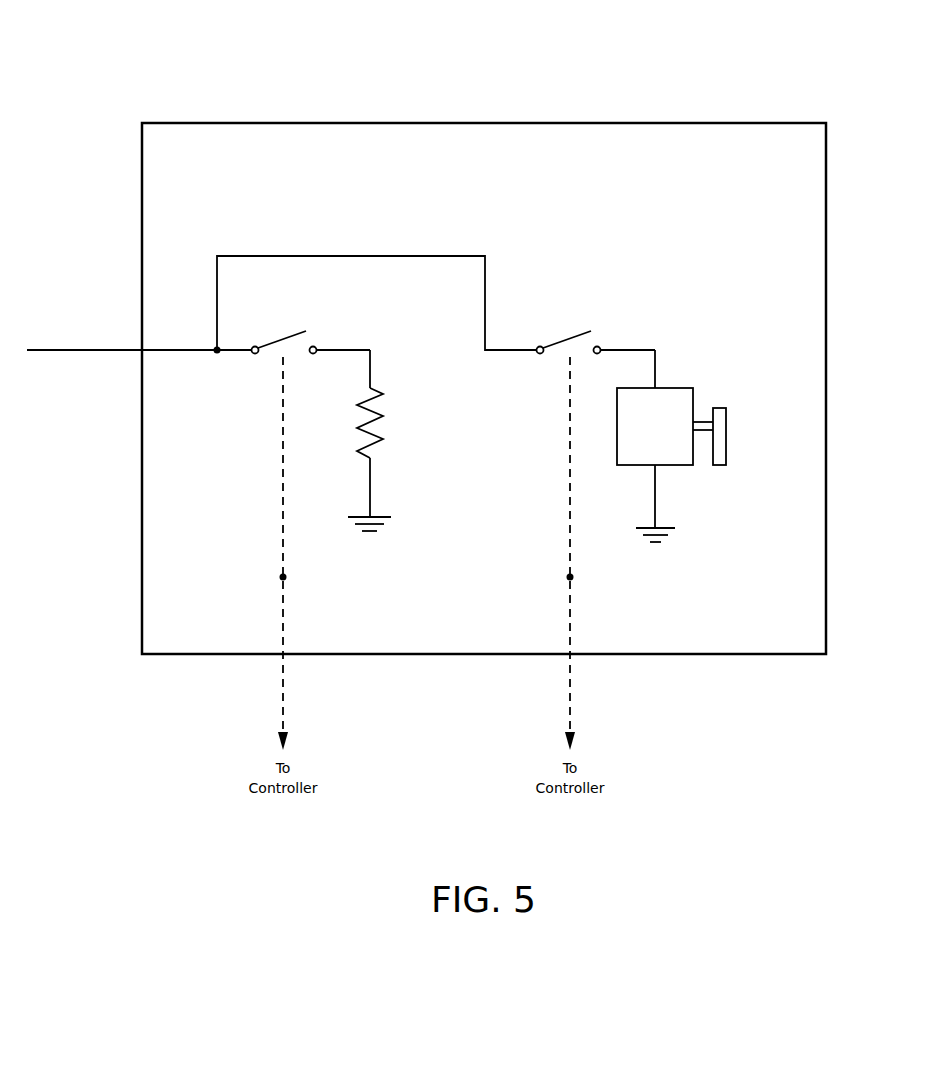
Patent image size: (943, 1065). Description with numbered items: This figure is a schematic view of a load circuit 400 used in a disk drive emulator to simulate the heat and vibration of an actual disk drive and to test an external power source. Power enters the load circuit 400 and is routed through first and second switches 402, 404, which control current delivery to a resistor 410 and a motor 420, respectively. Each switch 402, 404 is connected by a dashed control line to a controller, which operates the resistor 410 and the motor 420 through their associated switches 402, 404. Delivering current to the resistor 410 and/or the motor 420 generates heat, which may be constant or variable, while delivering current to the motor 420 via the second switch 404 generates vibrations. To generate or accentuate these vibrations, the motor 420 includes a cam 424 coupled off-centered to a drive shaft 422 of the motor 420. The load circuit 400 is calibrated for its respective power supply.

The load circuit 400 is at (136, 50).
The first switch 402 is at (288, 332).
The second switch 404 is at (571, 332).
The resistor 410 is at (380, 412).
The motor 420 is at (694, 388).
The drive shaft 422 is at (700, 433).
The cam 424 is at (720, 465).